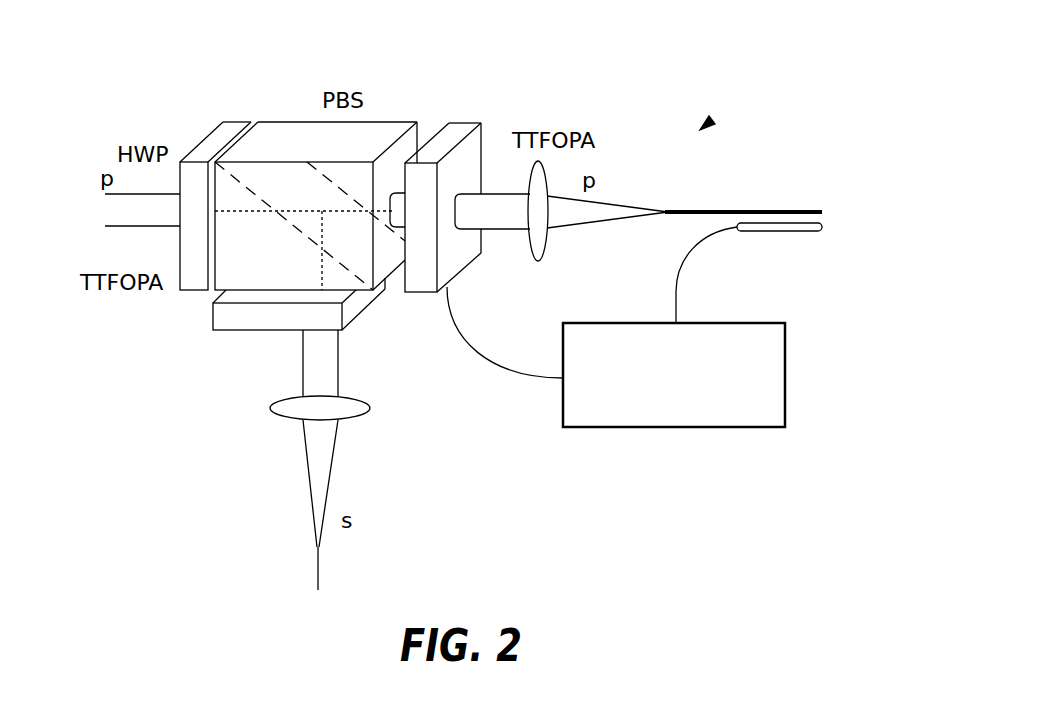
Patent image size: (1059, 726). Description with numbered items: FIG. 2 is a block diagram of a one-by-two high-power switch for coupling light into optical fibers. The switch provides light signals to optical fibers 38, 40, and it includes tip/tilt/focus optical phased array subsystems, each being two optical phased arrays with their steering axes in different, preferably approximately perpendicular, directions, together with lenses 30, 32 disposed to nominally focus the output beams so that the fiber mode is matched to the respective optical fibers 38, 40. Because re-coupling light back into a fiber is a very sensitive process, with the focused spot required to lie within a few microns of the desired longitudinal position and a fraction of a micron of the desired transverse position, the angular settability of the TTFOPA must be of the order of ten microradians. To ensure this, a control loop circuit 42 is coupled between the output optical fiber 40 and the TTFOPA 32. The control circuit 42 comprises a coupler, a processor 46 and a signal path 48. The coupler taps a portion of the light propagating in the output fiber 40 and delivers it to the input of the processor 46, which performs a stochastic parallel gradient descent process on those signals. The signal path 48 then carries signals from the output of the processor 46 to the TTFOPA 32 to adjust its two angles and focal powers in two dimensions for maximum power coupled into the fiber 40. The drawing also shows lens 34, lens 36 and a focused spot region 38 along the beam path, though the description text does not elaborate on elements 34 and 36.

The lens 30 is at (213, 318).
The TTFOPA 32 is at (457, 123).
The lens 34 is at (270, 408).
The lens 36 is at (543, 259).
The optical fiber 38 is at (316, 565).
The output optical fiber 40 is at (768, 210).
The control loop circuit 42 is at (712, 120).
The processor 46 is at (688, 405).
The signal path 48 is at (486, 363).